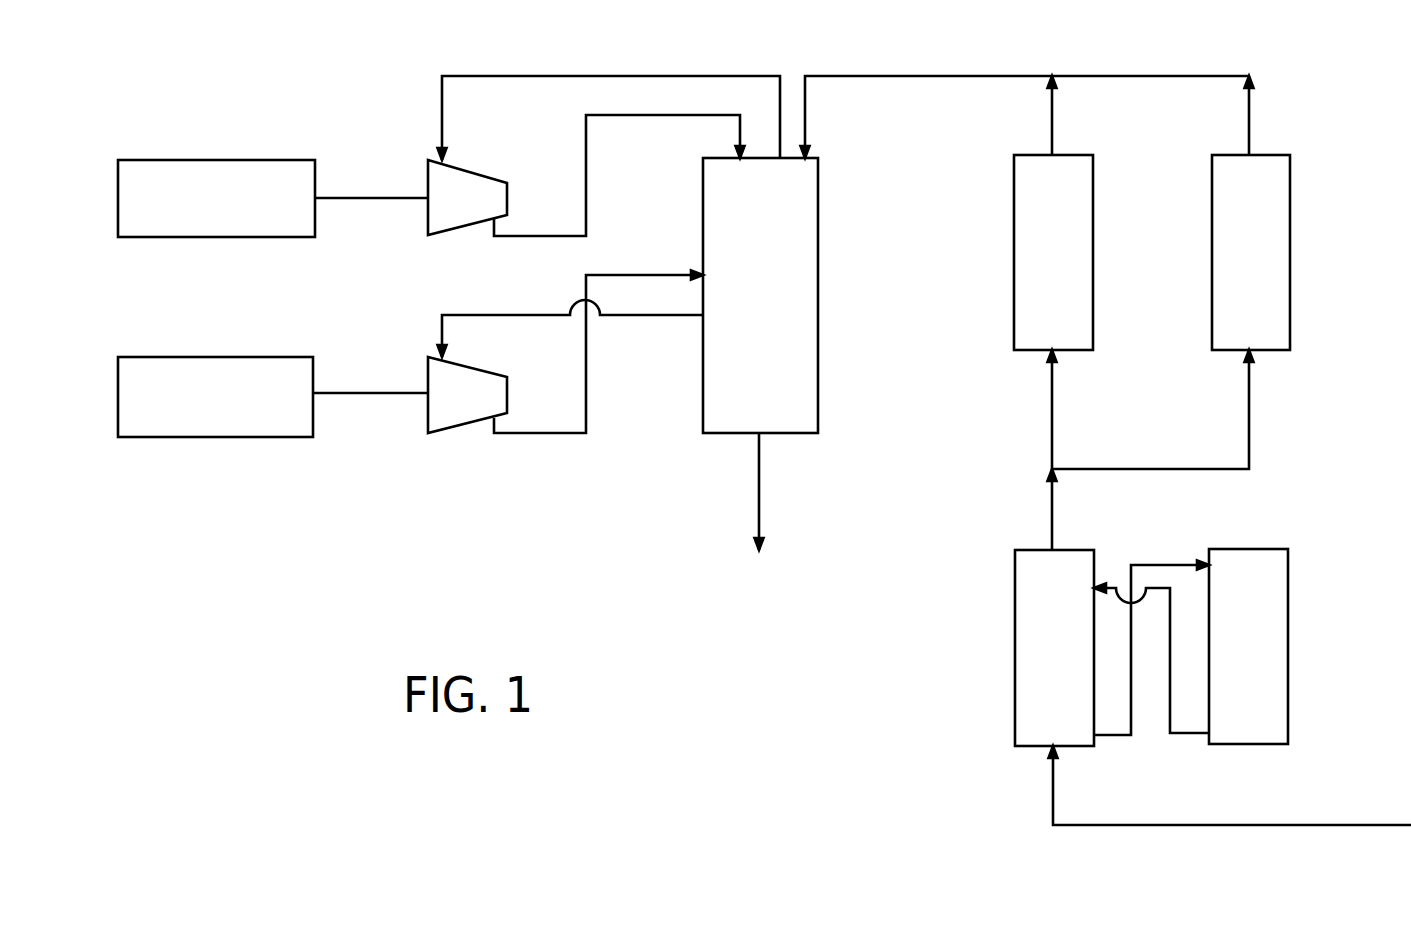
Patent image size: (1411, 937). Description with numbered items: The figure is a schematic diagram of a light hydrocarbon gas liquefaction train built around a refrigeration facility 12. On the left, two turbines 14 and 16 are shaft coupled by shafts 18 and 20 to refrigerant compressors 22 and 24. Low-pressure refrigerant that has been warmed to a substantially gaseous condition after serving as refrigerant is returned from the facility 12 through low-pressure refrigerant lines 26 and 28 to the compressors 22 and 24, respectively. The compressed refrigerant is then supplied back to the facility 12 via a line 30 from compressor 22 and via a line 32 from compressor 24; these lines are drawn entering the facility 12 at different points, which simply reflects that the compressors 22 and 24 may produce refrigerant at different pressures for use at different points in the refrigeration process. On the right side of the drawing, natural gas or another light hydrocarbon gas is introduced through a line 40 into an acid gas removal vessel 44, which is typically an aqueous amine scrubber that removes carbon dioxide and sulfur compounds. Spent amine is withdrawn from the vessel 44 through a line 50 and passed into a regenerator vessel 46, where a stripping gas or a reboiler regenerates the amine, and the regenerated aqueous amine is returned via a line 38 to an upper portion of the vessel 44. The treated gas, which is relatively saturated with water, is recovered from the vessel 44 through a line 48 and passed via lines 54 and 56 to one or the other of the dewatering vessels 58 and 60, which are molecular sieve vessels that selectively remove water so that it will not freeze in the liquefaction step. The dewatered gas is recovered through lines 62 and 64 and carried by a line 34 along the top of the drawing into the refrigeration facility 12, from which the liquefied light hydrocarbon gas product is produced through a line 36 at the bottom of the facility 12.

The refrigeration facility 12 is at (832, 322).
The turbine 14 is at (218, 160).
The turbine 16 is at (218, 357).
The shaft 18 is at (366, 199).
The shaft 20 is at (367, 394).
The refrigerant compressor 22 is at (455, 235).
The refrigerant compressor 24 is at (462, 433).
The low-pressure refrigerant line 26 is at (525, 78).
The low-pressure refrigerant line 28 is at (640, 316).
The line 30 is at (620, 116).
The line 32 is at (548, 434).
The line 34 is at (915, 76).
The line 36 is at (762, 481).
The line 38 is at (1188, 735).
The line 40 is at (1238, 827).
The acid gas removal vessel 44 is at (1013, 637).
The regenerator vessel 46 is at (1290, 660).
The line 48 is at (1055, 524).
The line 50 is at (1133, 710).
The line 54 is at (1055, 434).
The line 56 is at (1252, 426).
The dewatering vessel 58 is at (1094, 275).
The dewatering vessel 60 is at (1290, 258).
The line 62 is at (1056, 136).
The line 64 is at (1252, 122).